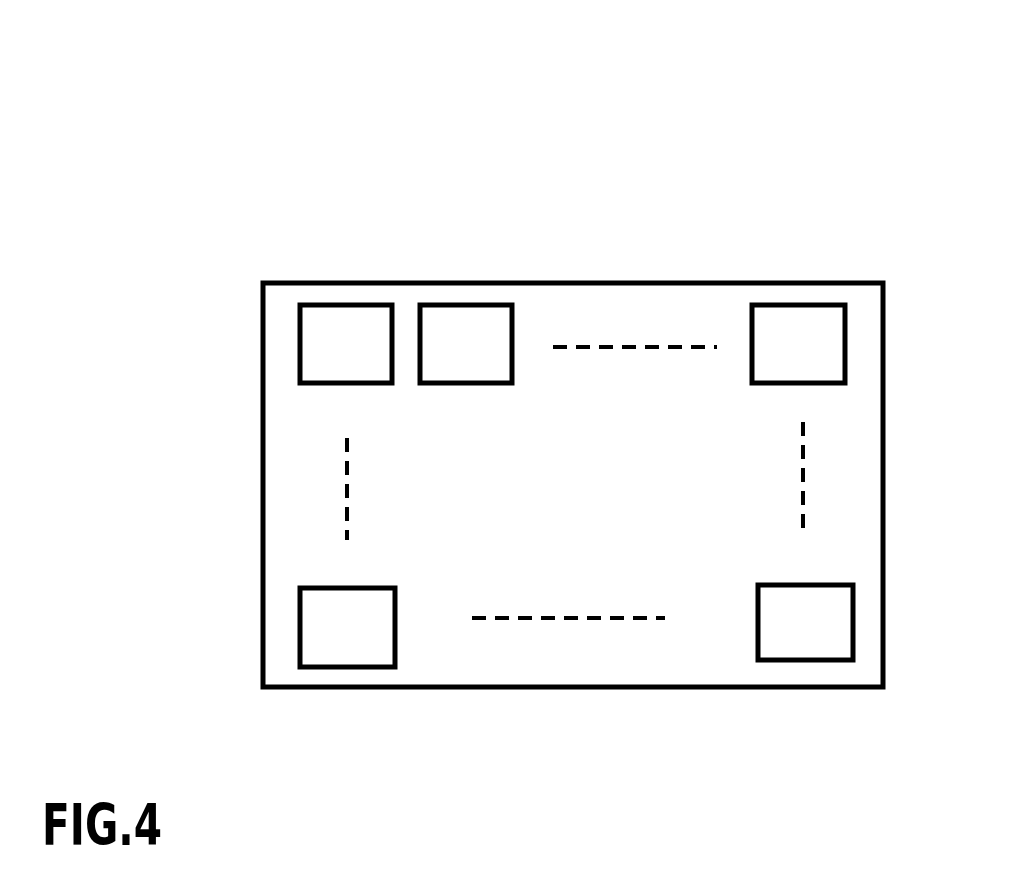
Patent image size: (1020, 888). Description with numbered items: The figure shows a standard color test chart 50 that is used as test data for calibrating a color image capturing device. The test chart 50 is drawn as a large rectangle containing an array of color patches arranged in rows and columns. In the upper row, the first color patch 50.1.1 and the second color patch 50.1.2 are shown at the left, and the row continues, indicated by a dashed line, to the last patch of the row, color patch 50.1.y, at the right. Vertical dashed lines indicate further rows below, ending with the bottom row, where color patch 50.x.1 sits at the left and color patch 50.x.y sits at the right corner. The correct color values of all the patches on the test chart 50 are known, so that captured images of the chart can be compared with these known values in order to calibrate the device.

The color test chart 50 is at (733, 88).
The color patch 50.1.1 is at (326, 310).
The color patch 50.1.2 is at (462, 310).
The color patch 50.1.y is at (800, 310).
The color patch 50.x.1 is at (373, 657).
The color patch 50.x.y is at (795, 657).